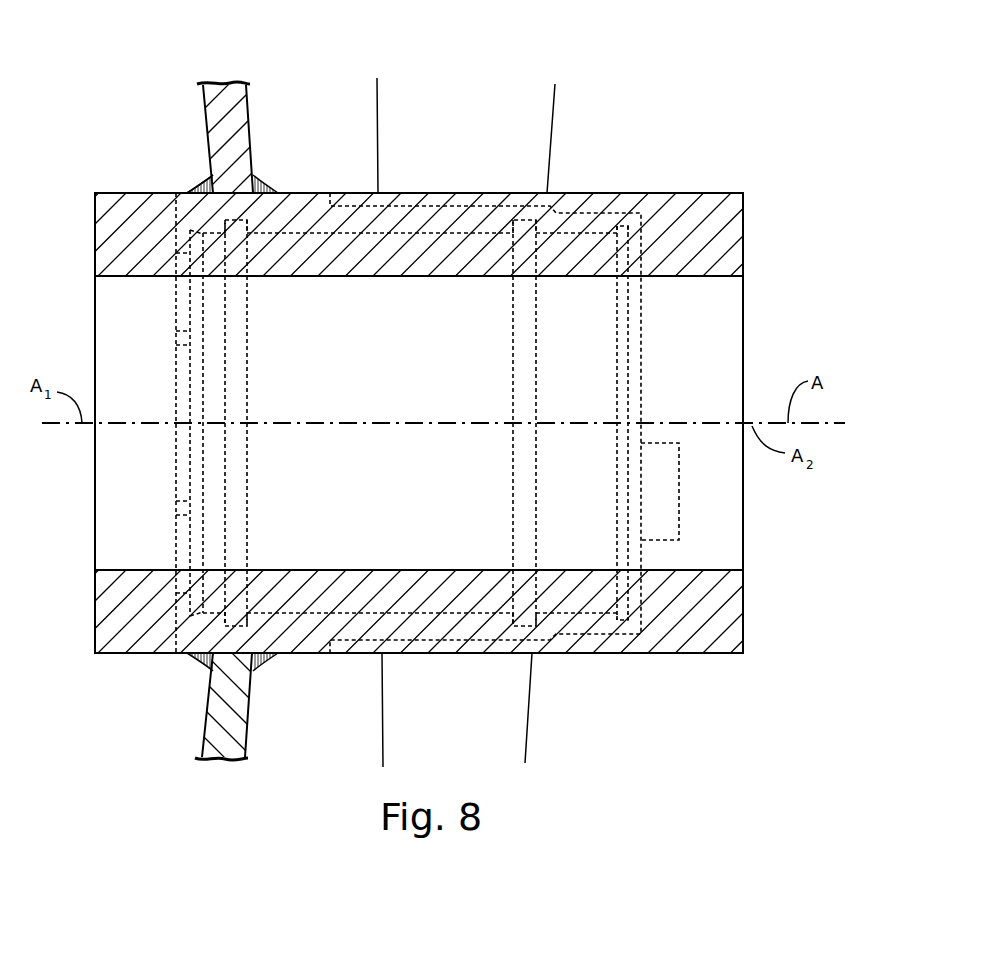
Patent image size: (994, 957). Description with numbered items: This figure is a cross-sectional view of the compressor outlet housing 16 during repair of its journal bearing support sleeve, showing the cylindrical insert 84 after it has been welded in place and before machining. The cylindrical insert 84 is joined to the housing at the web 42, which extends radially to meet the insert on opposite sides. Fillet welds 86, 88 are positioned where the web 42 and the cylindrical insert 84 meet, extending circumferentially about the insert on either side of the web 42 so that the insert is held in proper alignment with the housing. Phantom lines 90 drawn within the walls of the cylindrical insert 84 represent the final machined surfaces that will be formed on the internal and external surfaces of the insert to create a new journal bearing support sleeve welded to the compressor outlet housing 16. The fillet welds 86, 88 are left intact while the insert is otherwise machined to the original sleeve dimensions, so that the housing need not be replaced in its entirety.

The compressor outlet housing 16 is at (687, 88).
The web 42 is at (222, 98).
The cylindrical insert 84 is at (743, 232).
The fillet weld 86 is at (198, 182).
The fillet weld 88 is at (260, 185).
The phantom lines 90 is at (622, 354).